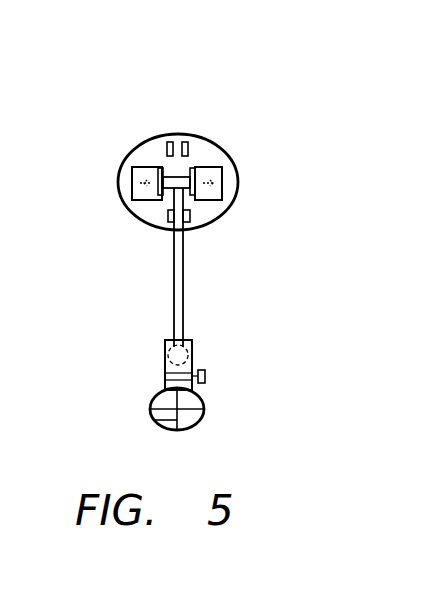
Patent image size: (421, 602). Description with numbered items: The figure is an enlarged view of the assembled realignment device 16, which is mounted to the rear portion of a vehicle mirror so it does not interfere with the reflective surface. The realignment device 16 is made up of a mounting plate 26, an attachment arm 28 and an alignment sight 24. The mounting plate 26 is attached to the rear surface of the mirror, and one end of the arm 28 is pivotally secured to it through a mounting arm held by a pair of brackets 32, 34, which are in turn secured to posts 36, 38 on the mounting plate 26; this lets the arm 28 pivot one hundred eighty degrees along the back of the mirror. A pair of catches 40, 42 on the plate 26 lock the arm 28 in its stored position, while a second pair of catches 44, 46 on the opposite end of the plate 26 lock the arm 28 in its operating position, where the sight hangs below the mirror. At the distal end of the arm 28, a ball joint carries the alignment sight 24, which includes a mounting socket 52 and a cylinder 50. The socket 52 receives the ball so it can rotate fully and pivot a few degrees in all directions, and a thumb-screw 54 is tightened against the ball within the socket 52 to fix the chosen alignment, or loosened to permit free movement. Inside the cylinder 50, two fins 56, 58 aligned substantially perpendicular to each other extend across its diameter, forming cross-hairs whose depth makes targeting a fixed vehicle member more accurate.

The realignment device 16 is at (118, 110).
The alignment sight 24 is at (147, 391).
The mounting plate 26 is at (210, 156).
The attachment arm 28 is at (181, 293).
The bracket 32 is at (138, 183).
The bracket 34 is at (222, 187).
The post 36 is at (161, 167).
The post 38 is at (198, 158).
The catch 40 is at (168, 139).
The catch 42 is at (185, 139).
The catch 44 is at (168, 218).
The catch 46 is at (190, 216).
The cylinder 50 is at (198, 397).
The mounting socket 52 is at (165, 340).
The thumb-screw 54 is at (206, 372).
The fin 56 is at (160, 418).
The fin 58 is at (197, 426).